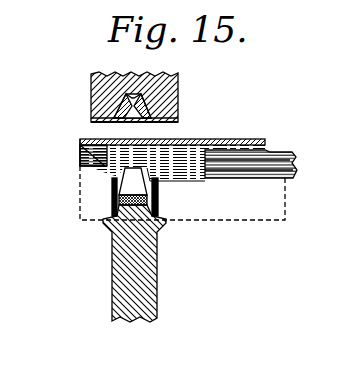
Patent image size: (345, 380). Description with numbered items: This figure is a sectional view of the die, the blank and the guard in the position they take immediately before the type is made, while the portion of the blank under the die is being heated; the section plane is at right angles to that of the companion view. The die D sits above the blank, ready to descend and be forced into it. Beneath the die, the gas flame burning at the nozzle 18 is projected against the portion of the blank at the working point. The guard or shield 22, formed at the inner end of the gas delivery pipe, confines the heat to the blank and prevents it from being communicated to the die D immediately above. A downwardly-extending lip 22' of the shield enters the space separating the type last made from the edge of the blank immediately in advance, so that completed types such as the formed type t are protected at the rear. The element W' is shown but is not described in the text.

The die D is at (172, 89).
The guard or shield 22 is at (138, 149).
The downwardly-extending lip 22' is at (148, 193).
The nozzle 18 is at (237, 178).
The formed type t is at (158, 203).
The punch W' is at (155, 250).